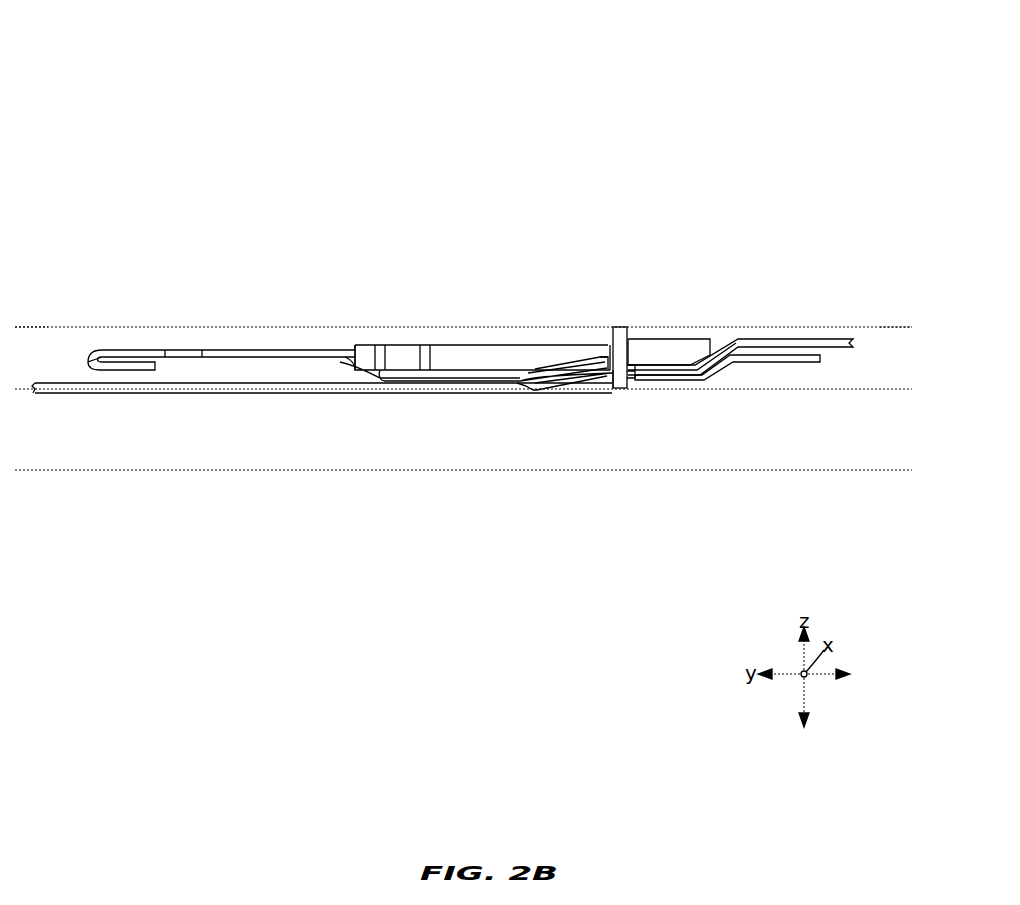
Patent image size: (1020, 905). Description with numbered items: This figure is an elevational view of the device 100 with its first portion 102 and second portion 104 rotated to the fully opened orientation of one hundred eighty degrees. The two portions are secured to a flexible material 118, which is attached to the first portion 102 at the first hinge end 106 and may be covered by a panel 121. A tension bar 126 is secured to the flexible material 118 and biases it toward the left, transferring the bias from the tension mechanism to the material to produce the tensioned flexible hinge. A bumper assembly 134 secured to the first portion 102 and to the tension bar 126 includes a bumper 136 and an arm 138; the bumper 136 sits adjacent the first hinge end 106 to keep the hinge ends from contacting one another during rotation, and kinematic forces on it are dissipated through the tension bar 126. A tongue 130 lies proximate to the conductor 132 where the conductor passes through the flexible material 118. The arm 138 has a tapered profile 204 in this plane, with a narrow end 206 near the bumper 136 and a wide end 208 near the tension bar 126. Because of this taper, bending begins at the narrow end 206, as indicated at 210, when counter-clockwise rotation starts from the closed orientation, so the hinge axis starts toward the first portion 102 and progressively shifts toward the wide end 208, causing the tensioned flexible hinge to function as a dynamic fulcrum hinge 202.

The device 100 is at (178, 60).
The first portion 102 is at (910, 325).
The second portion 104 is at (48, 325).
The first hinge end 106 is at (681, 324).
The flexible material 118 is at (779, 363).
The panel 121 is at (283, 471).
The tension bar 126 is at (152, 349).
The tongue 130 is at (533, 386).
The conductor 132 is at (834, 340).
The bumper assembly 134 is at (620, 394).
The bumper 136 is at (623, 327).
The arm 138 is at (497, 357).
The dynamic fulcrum hinge 202 is at (577, 409).
The tapered profile 204 is at (605, 310).
The narrow end 206 is at (607, 344).
The wide end 208 is at (494, 358).
The bending start location 210 is at (608, 328).